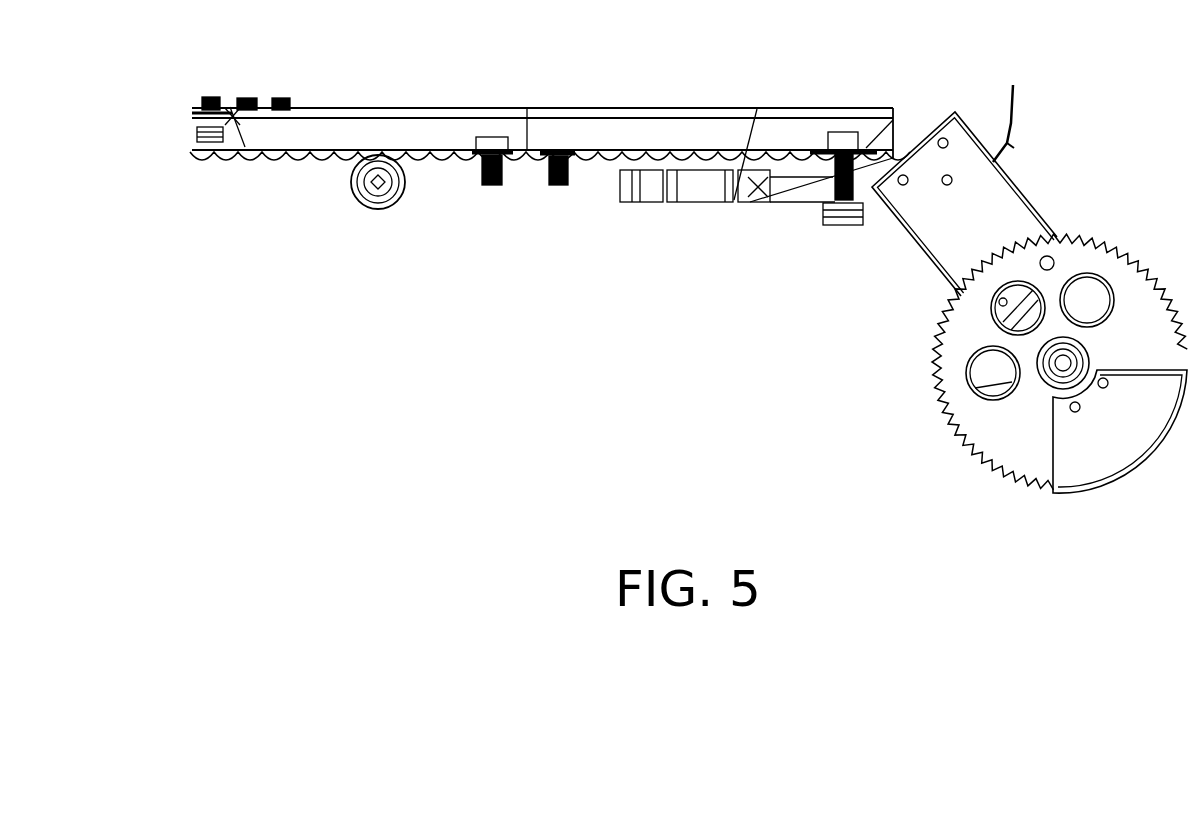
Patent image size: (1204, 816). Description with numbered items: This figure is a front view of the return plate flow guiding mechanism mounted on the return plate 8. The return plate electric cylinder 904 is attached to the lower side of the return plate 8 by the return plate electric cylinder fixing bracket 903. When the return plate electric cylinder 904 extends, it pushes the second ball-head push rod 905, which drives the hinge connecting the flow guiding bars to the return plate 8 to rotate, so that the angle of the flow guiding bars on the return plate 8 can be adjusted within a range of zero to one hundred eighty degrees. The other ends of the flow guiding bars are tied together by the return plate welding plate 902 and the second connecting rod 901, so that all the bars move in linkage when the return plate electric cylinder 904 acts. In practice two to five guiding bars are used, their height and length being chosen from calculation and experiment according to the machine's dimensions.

The return plate 8 is at (545, 152).
The second connecting rod 901 is at (207, 98).
The return plate welding plate 902 is at (308, 59).
The return plate electric cylinder fixing bracket 903 is at (690, 152).
The return plate electric cylinder 904 is at (777, 160).
The second ball-head push rod 905 is at (863, 137).